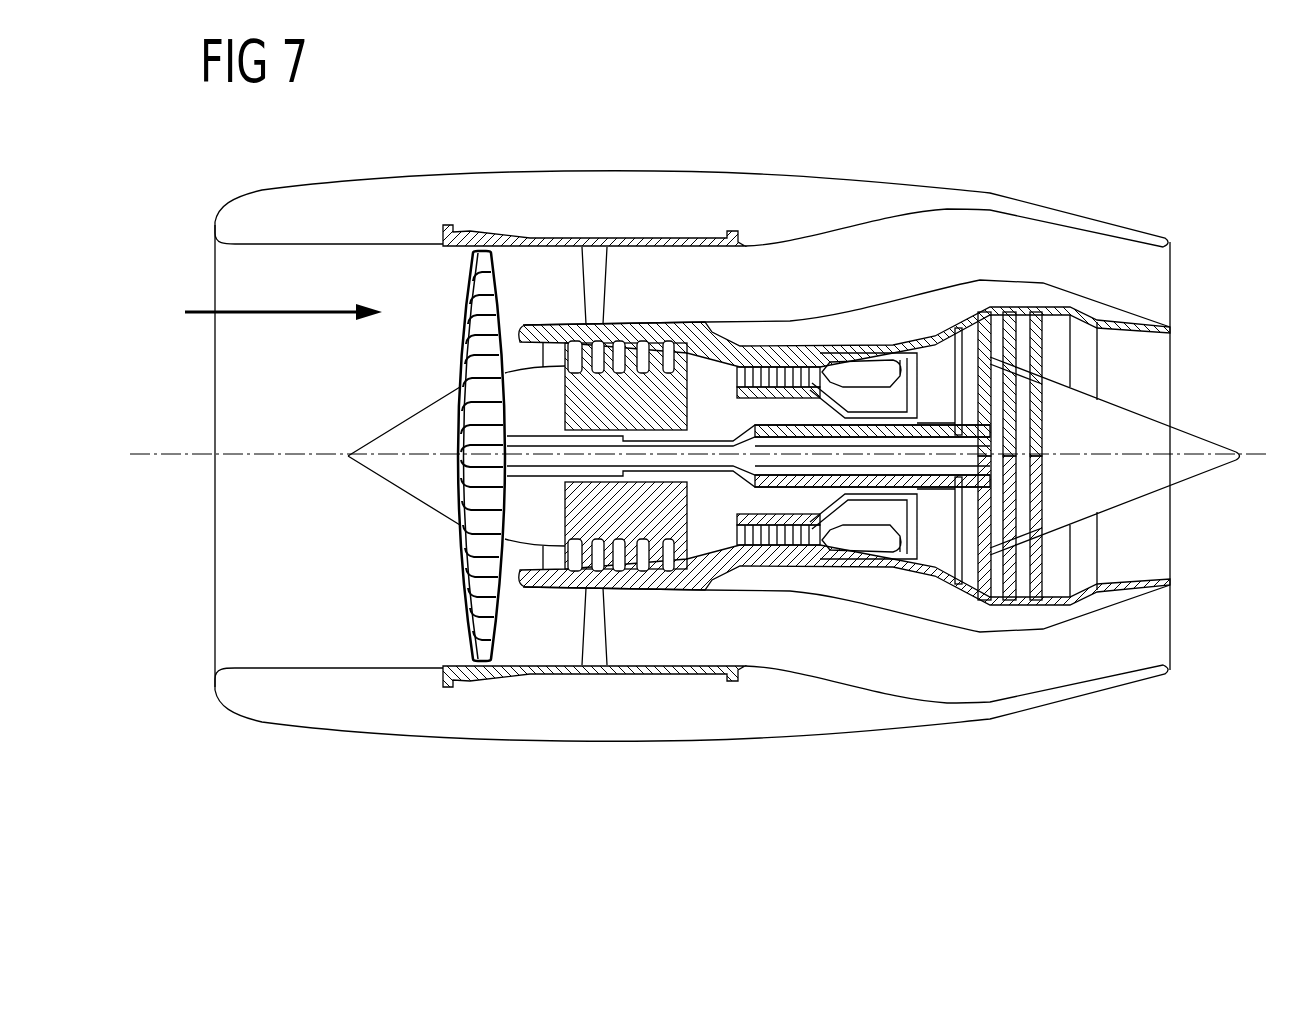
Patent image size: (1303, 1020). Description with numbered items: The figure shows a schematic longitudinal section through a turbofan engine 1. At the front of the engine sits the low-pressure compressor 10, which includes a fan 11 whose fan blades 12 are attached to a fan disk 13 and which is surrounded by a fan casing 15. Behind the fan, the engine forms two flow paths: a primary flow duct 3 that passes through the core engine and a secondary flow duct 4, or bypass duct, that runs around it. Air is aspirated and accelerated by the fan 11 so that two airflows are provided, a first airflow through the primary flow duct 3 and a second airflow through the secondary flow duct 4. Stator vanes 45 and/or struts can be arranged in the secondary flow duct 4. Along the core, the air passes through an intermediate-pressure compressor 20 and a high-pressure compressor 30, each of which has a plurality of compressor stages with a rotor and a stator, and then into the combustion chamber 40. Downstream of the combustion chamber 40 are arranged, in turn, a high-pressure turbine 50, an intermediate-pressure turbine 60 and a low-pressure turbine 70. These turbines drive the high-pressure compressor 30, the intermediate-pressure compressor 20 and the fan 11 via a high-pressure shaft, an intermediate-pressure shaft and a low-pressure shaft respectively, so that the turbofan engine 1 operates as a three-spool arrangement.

The turbofan engine 1 is at (663, 160).
The primary flow duct 3 is at (556, 352).
The secondary flow duct 4 is at (550, 268).
The stator vanes 45 is at (594, 265).
The low-pressure compressor 10 is at (428, 363).
The fan 11 is at (466, 302).
The fan blades 12 is at (470, 618).
The fan disk 13 is at (463, 513).
The fan casing 15 is at (477, 228).
The intermediate-pressure compressor 20 is at (632, 342).
The high-pressure compressor 30 is at (794, 342).
The combustion chamber 40 is at (860, 360).
The high-pressure turbine 50 is at (934, 342).
The intermediate-pressure turbine 60 is at (970, 335).
The low-pressure turbine 70 is at (1047, 330).